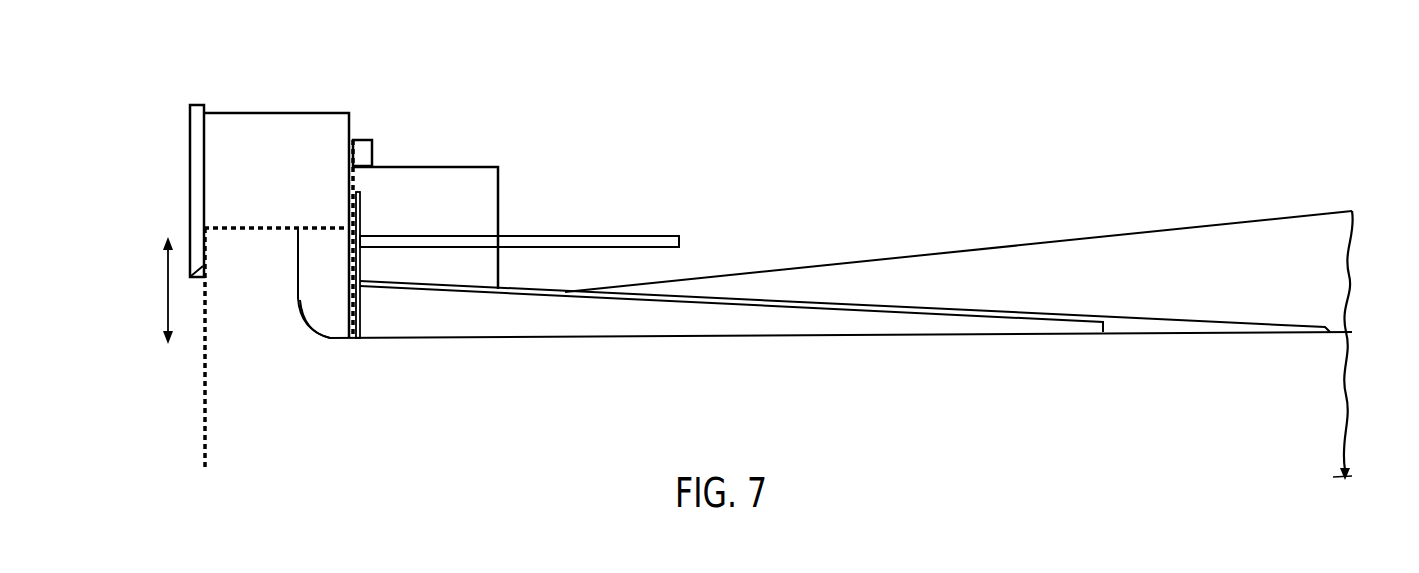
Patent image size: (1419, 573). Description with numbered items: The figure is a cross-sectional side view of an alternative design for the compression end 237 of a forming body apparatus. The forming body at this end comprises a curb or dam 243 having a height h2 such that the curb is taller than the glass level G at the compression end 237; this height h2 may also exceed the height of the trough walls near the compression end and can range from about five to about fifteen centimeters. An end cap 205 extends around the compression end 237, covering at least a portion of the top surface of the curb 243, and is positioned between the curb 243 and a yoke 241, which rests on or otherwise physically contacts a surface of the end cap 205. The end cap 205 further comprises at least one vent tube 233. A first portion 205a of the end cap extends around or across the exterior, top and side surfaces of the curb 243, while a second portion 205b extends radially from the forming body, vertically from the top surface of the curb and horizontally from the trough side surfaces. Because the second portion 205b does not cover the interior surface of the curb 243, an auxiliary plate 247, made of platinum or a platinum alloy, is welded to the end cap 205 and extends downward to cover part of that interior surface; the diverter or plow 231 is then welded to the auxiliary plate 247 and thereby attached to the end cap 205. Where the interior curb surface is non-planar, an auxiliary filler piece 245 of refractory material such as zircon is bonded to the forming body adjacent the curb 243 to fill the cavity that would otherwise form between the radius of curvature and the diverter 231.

The compression end 237 is at (176, 70).
The vent tube 233 is at (190, 157).
The yoke 241 is at (327, 194).
The curb 243 is at (268, 287).
The auxiliary filler piece 245 is at (325, 317).
The auxiliary plate 247 is at (362, 203).
The first portion of the end cap 205a is at (240, 226).
The second portion of the end cap 205b is at (348, 168).
The end cap 205 is at (202, 420).
The diverter 231 is at (520, 292).
The glass level G is at (532, 242).
The height of the curb h2 is at (171, 290).